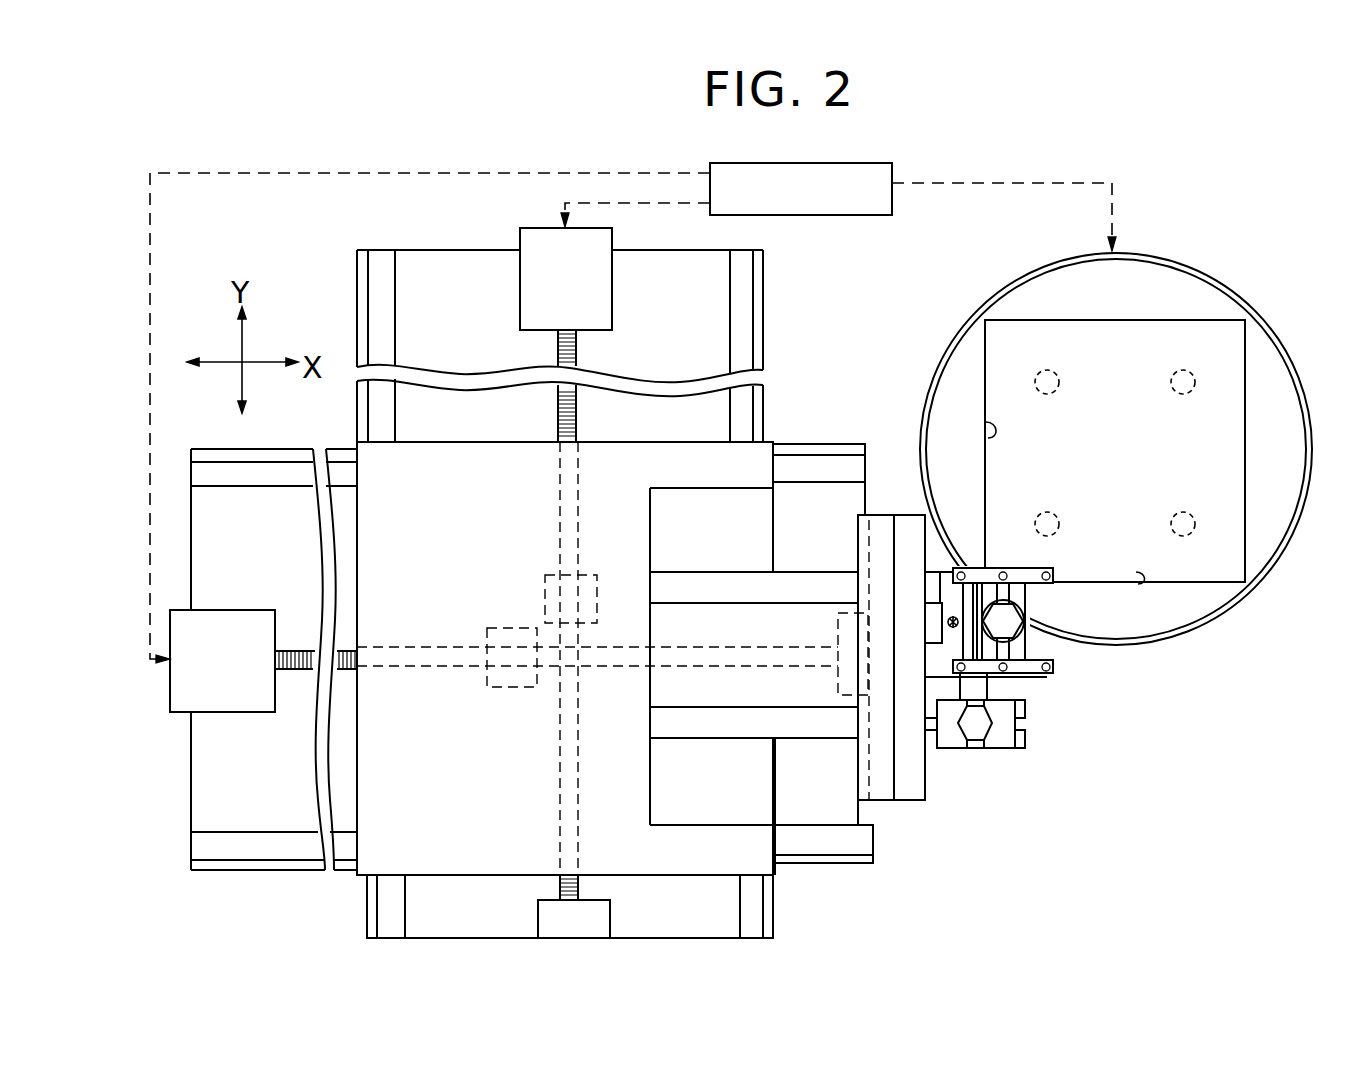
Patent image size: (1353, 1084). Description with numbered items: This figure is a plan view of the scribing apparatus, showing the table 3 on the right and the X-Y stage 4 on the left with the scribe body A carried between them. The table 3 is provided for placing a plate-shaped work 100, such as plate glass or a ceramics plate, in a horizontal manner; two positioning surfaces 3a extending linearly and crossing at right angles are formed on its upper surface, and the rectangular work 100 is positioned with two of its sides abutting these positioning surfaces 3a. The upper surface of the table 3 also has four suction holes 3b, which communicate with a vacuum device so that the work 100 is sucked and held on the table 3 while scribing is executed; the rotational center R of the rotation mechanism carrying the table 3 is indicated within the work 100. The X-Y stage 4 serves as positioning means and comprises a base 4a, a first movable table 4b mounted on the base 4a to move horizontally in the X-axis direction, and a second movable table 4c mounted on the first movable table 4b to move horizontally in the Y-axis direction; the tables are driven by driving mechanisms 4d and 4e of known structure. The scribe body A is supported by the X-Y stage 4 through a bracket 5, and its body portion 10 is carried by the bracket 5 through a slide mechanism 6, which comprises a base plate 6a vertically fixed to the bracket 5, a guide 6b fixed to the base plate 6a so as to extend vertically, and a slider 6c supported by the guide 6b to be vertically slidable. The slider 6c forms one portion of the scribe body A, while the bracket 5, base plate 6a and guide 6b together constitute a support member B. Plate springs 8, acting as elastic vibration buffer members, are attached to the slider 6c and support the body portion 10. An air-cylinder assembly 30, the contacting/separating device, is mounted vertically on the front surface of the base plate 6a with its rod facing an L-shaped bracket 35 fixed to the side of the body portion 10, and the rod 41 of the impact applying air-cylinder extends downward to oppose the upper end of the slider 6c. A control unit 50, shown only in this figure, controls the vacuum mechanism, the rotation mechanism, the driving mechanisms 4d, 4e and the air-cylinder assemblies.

The table 3 is at (1160, 300).
The positioning surfaces 3a is at (988, 430).
The suction holes 3b is at (1192, 378).
The work 100 is at (1246, 402).
The rotational center R is at (1122, 455).
The X-Y stage 4 is at (348, 308).
The base 4a is at (818, 444).
The first movable table 4b is at (705, 912).
The second movable table 4c is at (660, 855).
The driving mechanism 4d is at (237, 610).
The driving mechanism 4e is at (518, 232).
The bracket 5 is at (815, 740).
The slide mechanism 6 is at (926, 807).
The base plate 6a is at (940, 578).
The guide 6b is at (932, 600).
The slider 6c is at (940, 578).
The plate springs 8 is at (1020, 575).
The body portion 10 is at (1027, 614).
The air-cylinder assembly 30 is at (1000, 740).
The L-shaped bracket 35 is at (975, 748).
The rod 41 is at (946, 620).
The control unit 50 is at (893, 178).
The scribe body A is at (1028, 685).
The support member B is at (890, 510).